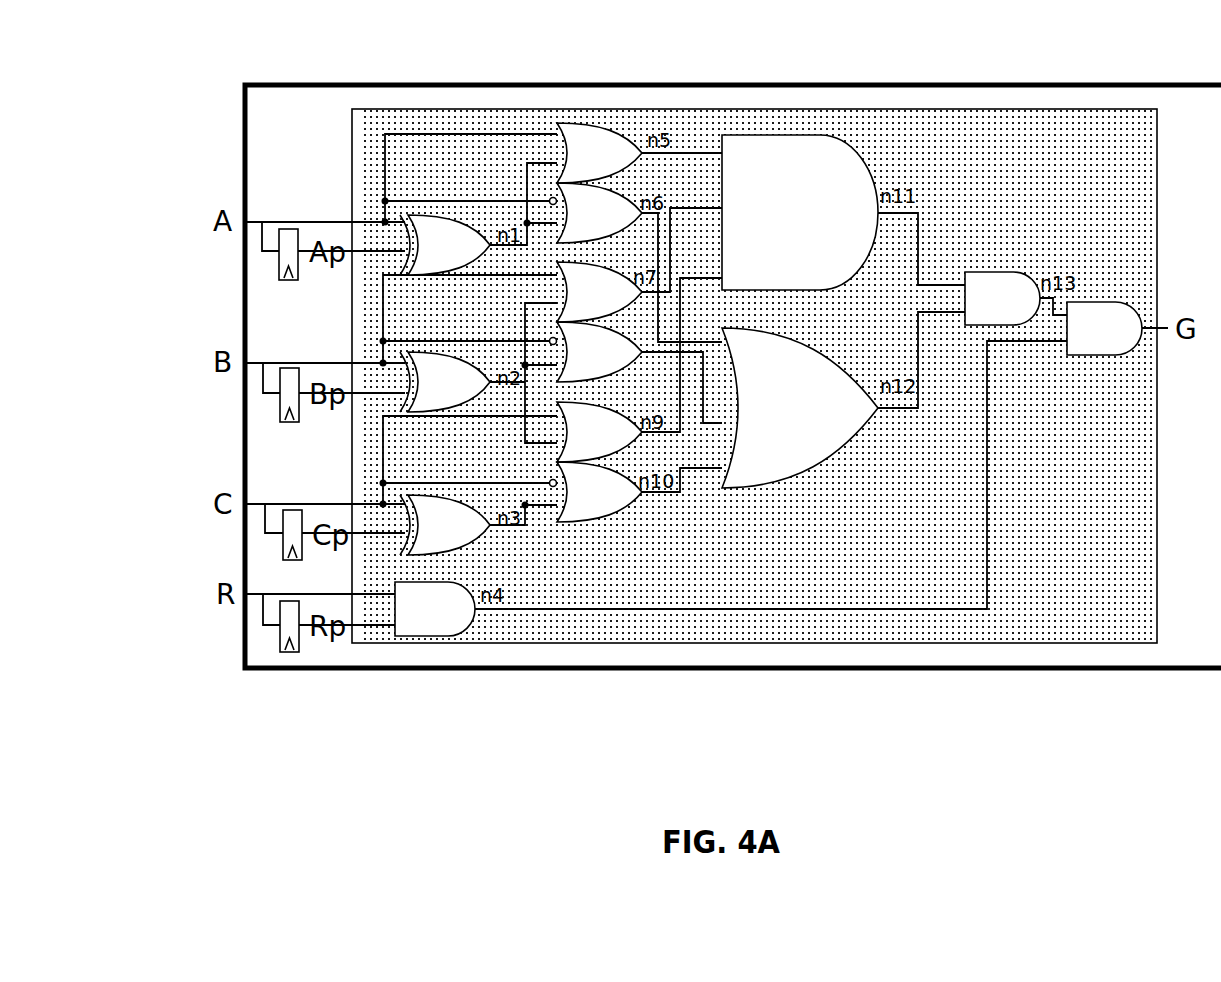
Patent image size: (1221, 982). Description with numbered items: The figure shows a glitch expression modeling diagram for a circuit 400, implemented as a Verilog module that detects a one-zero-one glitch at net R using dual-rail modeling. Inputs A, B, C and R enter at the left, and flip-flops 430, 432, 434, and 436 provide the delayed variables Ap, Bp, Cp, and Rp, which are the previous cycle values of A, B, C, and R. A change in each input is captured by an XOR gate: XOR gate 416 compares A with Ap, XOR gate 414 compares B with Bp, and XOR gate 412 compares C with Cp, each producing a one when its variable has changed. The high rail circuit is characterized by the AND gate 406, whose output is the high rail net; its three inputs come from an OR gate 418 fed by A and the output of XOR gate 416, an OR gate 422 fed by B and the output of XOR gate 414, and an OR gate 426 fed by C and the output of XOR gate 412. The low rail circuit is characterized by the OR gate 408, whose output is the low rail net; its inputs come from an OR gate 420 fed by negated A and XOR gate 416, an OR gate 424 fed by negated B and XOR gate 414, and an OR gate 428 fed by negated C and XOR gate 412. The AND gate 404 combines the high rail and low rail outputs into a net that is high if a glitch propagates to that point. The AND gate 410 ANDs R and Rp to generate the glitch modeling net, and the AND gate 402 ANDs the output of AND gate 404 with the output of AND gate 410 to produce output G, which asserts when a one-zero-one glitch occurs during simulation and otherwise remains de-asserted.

The circuit 400 is at (168, 113).
The AND gate 402 is at (1105, 302).
The AND gate 404 is at (987, 277).
The AND gate 406 is at (773, 135).
The OR gate 408 is at (822, 473).
The AND gate 410 is at (428, 636).
The XOR gate 412 is at (470, 538).
The XOR gate 414 is at (430, 353).
The XOR gate 416 is at (431, 215).
The OR gate 418 is at (600, 125).
The OR gate 420 is at (618, 183).
The OR gate 422 is at (600, 262).
The OR gate 424 is at (610, 380).
The OR gate 426 is at (553, 428).
The OR gate 428 is at (630, 498).
The flip-flop 430 is at (285, 281).
The flip-flop 432 is at (282, 422).
The flip-flop 434 is at (285, 560).
The flip-flop 436 is at (285, 652).